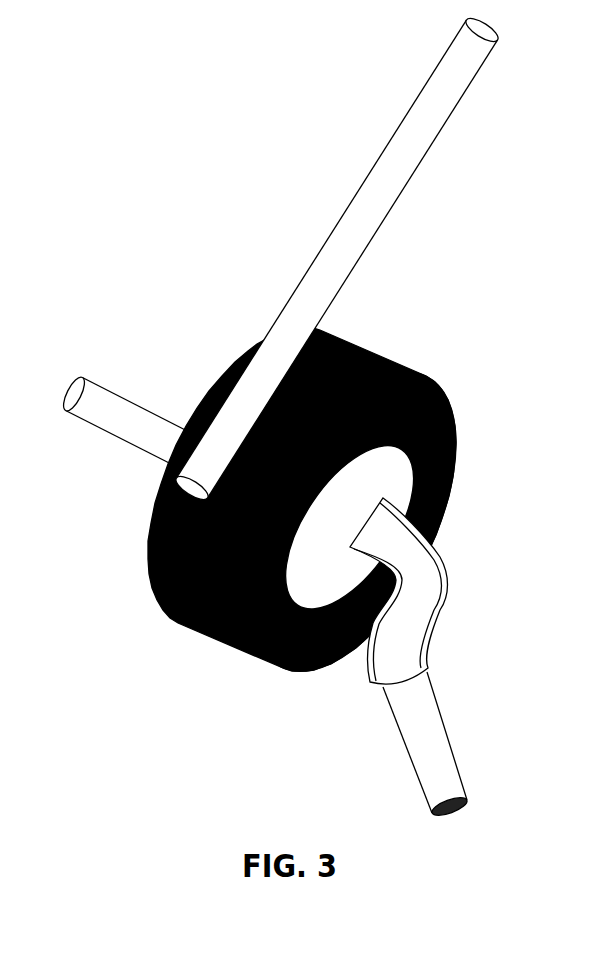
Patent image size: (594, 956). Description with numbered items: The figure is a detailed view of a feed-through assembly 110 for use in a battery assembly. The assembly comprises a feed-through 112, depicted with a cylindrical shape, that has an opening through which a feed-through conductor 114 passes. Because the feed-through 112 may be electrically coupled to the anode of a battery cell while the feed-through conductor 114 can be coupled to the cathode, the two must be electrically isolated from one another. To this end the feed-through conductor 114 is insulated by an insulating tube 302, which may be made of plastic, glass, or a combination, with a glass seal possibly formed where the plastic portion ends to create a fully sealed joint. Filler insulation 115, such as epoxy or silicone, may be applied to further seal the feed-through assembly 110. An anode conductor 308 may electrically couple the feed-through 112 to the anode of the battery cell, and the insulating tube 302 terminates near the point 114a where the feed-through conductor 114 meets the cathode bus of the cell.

The feed-through assembly 110 is at (155, 140).
The feed-through 112 is at (329, 516).
The feed-through conductor 114 is at (90, 425).
The feed-through conductor termination 114a is at (447, 740).
The filler insulation 115 is at (383, 487).
The insulating tube 302 is at (447, 597).
The anode conductor 308 is at (447, 115).